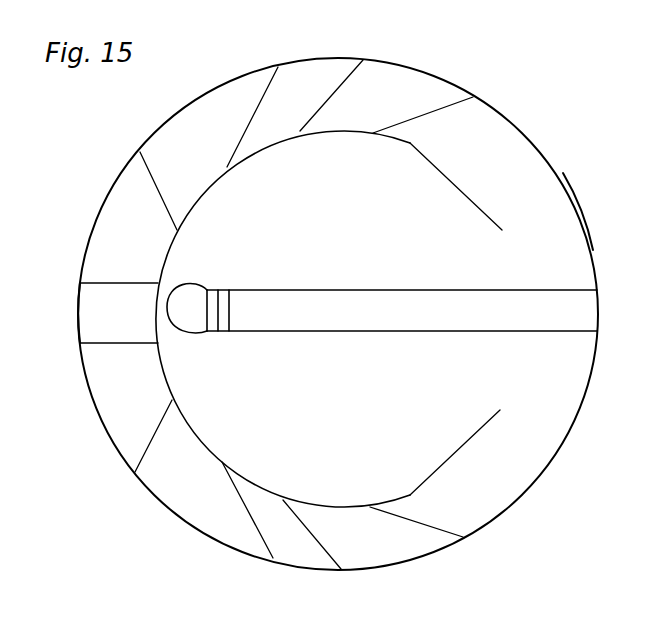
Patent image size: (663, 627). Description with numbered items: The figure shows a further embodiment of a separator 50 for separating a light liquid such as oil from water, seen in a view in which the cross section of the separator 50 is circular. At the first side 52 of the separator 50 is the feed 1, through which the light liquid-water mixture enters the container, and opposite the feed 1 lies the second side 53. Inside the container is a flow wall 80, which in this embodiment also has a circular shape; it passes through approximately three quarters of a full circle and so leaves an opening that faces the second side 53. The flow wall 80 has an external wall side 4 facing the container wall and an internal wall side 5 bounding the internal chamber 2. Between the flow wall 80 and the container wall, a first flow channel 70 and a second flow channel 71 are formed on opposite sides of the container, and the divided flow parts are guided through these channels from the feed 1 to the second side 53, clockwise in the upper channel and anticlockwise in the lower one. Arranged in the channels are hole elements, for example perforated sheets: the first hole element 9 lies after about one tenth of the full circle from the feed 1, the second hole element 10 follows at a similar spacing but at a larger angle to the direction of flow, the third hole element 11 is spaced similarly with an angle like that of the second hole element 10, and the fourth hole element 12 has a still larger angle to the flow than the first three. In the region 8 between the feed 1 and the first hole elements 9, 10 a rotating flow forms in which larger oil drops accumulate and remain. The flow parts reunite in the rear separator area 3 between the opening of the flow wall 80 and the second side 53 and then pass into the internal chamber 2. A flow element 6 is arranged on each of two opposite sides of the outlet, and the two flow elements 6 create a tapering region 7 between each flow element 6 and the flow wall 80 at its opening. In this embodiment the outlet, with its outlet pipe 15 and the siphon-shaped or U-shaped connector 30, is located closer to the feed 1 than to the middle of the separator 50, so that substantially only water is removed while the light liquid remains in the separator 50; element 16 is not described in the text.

The feed 1 is at (77, 302).
The internal chamber 2 is at (202, 272).
The rear separator area 3 is at (575, 275).
The external wall side 4 is at (273, 137).
The internal wall side 5 is at (263, 150).
The flow element 6 is at (458, 193).
The tapering region 7 is at (505, 280).
The region 8 is at (136, 234).
The first hole element 9 is at (151, 166).
The second hole element 10 is at (283, 72).
The third hole element 11 is at (377, 58).
The fourth hole element 12 is at (443, 105).
The outlet pipe 15 is at (318, 288).
The slot end bulb 16 is at (177, 334).
The connector 30 is at (215, 334).
The separator 50 is at (548, 82).
The first side 52 is at (93, 218).
The second side 53 is at (563, 173).
The first flow channel 70 is at (393, 111).
The second flow channel 71 is at (381, 553).
The flow wall 80 is at (207, 188).